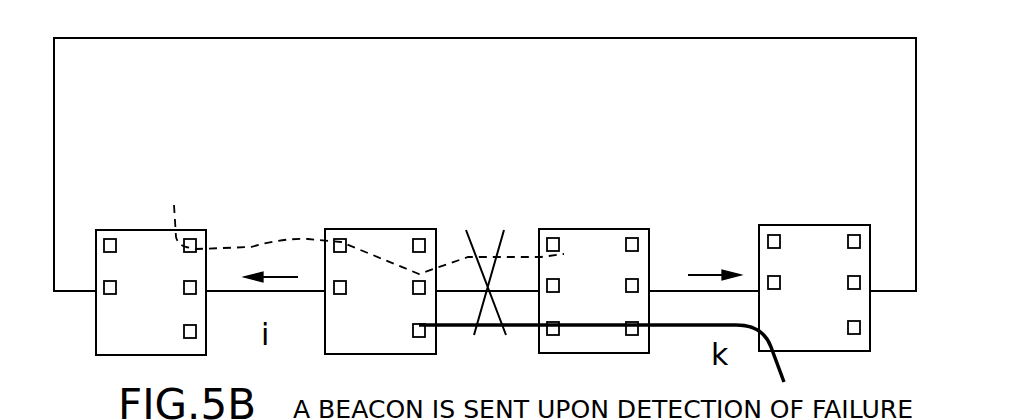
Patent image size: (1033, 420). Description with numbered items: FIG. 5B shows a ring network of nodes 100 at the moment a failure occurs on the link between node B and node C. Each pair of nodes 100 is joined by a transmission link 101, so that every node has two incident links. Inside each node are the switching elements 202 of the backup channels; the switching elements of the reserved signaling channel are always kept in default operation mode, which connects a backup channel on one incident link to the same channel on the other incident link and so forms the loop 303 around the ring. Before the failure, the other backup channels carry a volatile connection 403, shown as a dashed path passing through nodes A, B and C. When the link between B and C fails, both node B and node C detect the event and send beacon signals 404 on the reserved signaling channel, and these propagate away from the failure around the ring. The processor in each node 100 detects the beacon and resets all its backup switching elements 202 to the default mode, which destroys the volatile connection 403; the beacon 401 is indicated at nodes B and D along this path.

The transmission link 101 is at (485, 151).
The loop 303 is at (485, 71).
The node 100 is at (472, 295).
The switching element 202 is at (496, 331).
The beacon signal 404 is at (492, 265).
The volatile connection 403 is at (563, 252).
The beacon 401 is at (417, 333).